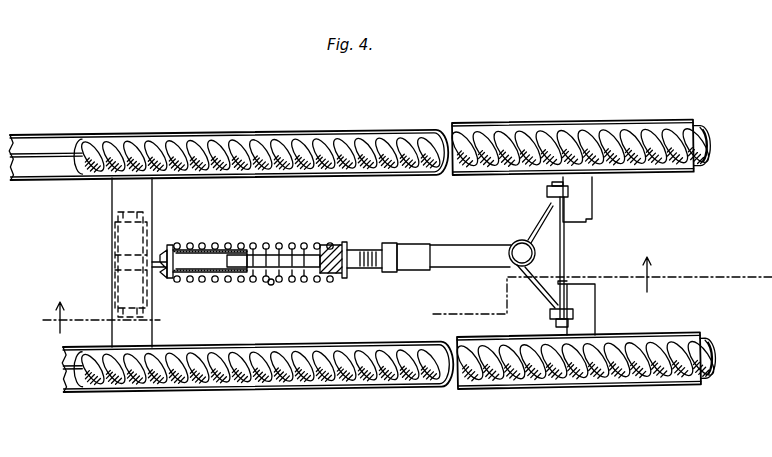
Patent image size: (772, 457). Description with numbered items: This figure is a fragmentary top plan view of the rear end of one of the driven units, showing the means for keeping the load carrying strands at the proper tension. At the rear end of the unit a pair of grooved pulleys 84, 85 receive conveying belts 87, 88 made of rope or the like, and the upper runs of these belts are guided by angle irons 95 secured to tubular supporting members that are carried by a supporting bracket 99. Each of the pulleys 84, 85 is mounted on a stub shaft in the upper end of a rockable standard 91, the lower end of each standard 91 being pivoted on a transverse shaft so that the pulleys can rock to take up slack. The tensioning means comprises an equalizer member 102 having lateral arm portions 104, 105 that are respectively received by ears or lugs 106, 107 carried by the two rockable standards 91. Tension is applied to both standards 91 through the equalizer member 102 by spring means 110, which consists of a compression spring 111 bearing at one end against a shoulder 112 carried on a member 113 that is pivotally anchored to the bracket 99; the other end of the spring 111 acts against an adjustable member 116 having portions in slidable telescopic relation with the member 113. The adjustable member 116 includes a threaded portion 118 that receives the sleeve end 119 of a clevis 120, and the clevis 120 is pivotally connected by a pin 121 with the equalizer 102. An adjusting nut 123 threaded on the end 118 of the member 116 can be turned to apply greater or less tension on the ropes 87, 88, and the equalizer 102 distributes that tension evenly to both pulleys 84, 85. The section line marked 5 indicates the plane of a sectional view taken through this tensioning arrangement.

The section line 5- 5 is at (400, 295).
The pulley 84 is at (645, 379).
The pulley 85 is at (648, 121).
The conveying belt 87 is at (172, 373).
The conveying belt 88 is at (185, 146).
The rockable standard 91 is at (592, 192).
The angle iron 95 is at (395, 127).
The supporting bracket 99 is at (103, 223).
The equalizer member 102 is at (566, 241).
The lateral arm portion 104 is at (556, 325).
The lateral arm portion 105 is at (547, 186).
The ear or lug 106 is at (548, 197).
The ear or lug 107 is at (550, 312).
The spring means 110 is at (285, 259).
The compression spring 111 is at (278, 246).
The shoulder 112 is at (170, 281).
The member 113 is at (158, 256).
The adjustable member 116 is at (346, 250).
The threaded portion 118 is at (374, 250).
The sleeve end 119 is at (411, 250).
The clevis 120 is at (463, 263).
The pin 121 is at (520, 250).
The adjusting nut 123 is at (389, 272).